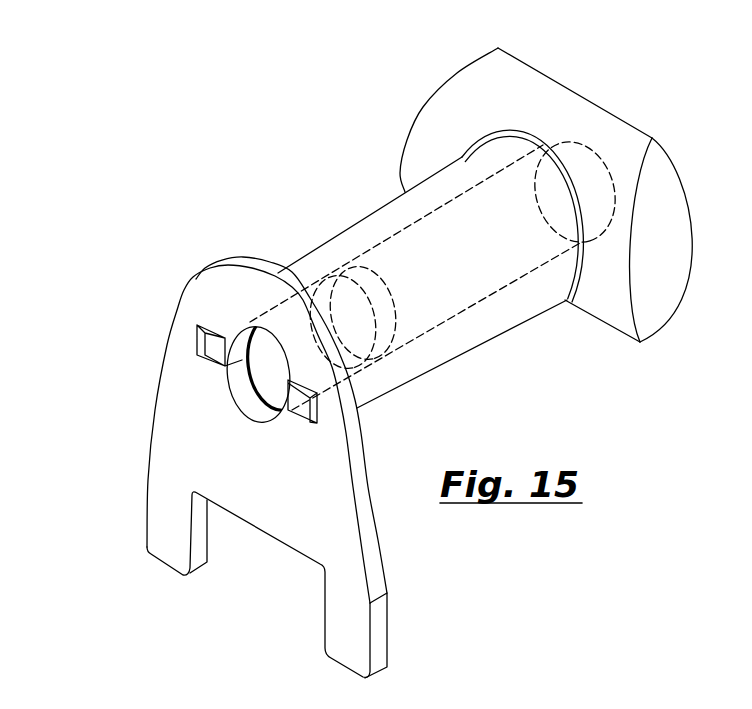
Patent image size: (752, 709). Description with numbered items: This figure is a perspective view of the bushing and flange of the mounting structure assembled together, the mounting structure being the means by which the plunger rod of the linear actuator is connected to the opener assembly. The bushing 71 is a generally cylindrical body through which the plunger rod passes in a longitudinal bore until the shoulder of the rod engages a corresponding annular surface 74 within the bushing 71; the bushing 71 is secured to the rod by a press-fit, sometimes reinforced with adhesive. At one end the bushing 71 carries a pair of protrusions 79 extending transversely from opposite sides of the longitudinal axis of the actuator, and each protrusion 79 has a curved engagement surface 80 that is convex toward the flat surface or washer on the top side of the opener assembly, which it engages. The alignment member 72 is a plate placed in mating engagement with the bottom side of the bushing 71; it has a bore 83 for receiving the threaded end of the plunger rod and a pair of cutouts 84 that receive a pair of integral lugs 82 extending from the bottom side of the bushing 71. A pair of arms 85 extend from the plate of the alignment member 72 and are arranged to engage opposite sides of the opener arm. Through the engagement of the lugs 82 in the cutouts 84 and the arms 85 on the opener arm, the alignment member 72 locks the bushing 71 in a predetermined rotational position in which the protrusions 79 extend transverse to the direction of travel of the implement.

The bushing 71 is at (372, 212).
The alignment member 72 is at (175, 388).
The annular surface 74 is at (345, 280).
The protrusion 79 is at (490, 100).
The curved engagement surface 80 is at (412, 153).
The lug 82 is at (215, 343).
The bore 83 is at (245, 397).
The cutout 84 is at (195, 331).
The arm 85 is at (350, 641).